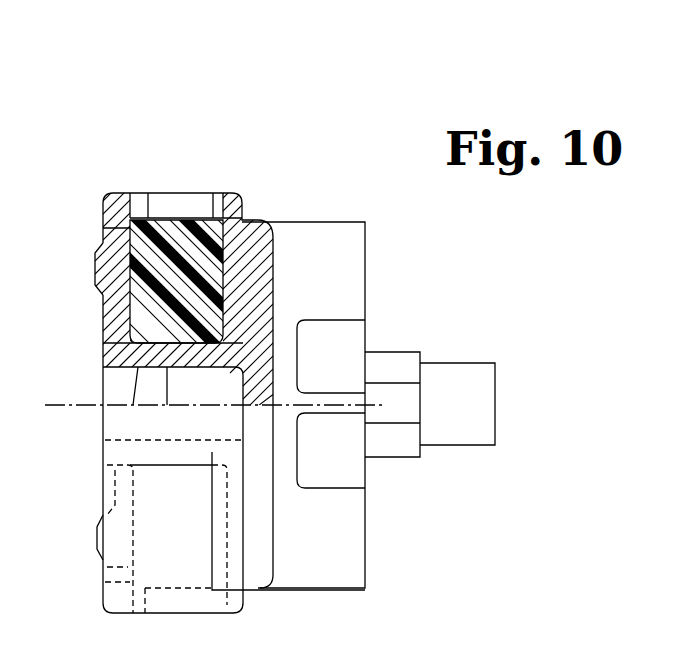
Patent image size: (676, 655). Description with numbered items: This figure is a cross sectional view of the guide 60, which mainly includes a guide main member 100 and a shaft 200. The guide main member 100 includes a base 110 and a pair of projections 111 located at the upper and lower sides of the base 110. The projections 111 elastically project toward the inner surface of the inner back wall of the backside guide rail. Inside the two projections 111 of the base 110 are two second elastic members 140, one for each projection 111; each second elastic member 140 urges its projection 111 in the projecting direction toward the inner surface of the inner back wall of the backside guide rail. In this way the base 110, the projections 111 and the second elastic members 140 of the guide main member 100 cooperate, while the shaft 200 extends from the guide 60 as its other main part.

The guide 60 is at (124, 116).
The guide main member 100 is at (271, 591).
The base 110 is at (340, 222).
The projections 111 is at (100, 268).
The second elastic members 140 is at (185, 225).
The shaft 200 is at (481, 388).